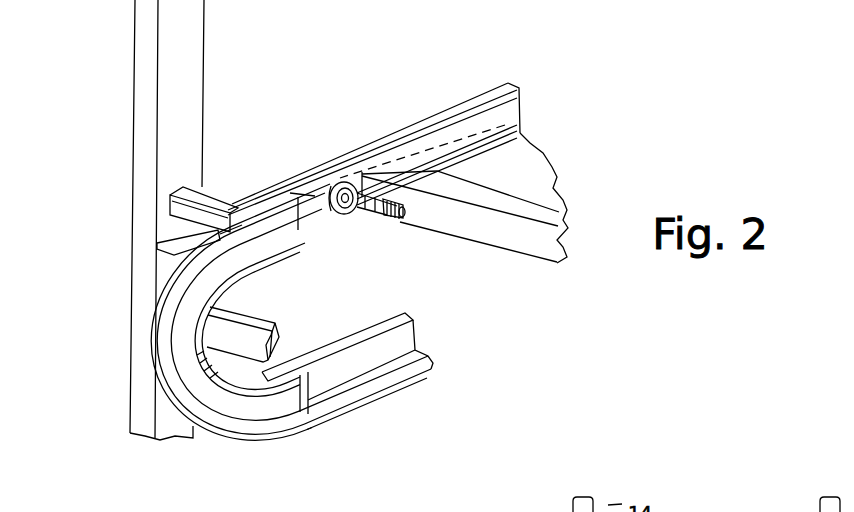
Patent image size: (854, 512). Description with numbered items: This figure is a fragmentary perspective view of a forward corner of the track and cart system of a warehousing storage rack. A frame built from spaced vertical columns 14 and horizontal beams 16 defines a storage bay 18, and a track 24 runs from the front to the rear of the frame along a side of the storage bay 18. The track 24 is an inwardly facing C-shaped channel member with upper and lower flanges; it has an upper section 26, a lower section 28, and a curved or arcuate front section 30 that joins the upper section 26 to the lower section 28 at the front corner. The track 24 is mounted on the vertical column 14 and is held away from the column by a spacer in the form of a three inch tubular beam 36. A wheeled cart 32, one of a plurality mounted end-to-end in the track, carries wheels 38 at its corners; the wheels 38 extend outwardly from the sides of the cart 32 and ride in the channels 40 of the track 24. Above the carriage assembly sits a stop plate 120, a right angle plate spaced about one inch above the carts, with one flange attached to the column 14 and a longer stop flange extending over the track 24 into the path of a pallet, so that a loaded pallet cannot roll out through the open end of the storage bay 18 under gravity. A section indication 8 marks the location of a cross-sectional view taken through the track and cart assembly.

The vertical column 14 is at (183, 36).
The storage bay 18 is at (278, 109).
The stop plate 120 is at (188, 213).
The wheeled cart 32 is at (534, 238).
The channel 40 is at (333, 216).
The upper section 26 is at (340, 216).
The wheel 38 is at (364, 222).
The section line 8- 8 is at (400, 228).
The tubular beam 36 is at (154, 307).
The curved front section 30 is at (180, 360).
The horizontal beam 16 is at (238, 332).
The lower section 28 is at (408, 378).
The track 24 is at (314, 424).